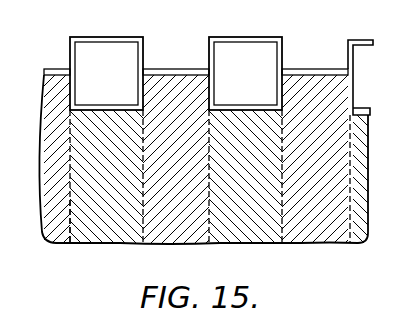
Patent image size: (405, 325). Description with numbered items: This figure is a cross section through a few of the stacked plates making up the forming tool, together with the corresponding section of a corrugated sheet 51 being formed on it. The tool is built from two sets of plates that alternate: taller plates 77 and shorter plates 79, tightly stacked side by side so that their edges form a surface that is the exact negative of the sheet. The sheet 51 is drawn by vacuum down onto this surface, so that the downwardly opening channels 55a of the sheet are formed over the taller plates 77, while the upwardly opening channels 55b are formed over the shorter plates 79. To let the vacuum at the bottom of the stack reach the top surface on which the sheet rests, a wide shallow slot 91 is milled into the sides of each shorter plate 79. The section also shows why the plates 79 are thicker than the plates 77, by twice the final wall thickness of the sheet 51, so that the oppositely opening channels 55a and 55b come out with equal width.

The corrugated sheet 51 is at (62, 70).
The downwardly opening channel 55a is at (100, 53).
The upwardly opening channel 55b is at (122, 97).
The taller plate 77 is at (40, 167).
The shorter plate 79 is at (100, 243).
The slot 91 is at (70, 208).